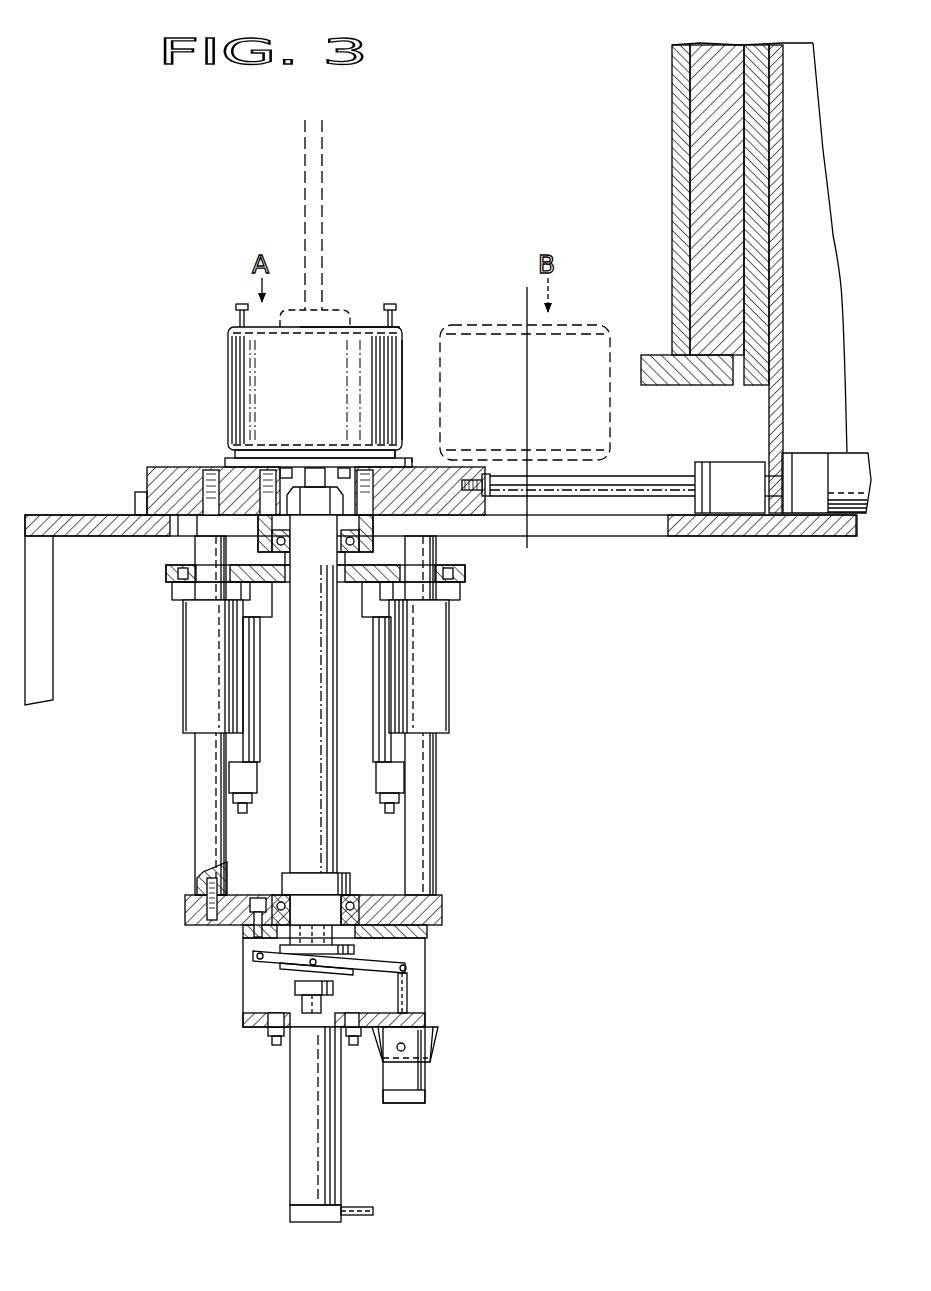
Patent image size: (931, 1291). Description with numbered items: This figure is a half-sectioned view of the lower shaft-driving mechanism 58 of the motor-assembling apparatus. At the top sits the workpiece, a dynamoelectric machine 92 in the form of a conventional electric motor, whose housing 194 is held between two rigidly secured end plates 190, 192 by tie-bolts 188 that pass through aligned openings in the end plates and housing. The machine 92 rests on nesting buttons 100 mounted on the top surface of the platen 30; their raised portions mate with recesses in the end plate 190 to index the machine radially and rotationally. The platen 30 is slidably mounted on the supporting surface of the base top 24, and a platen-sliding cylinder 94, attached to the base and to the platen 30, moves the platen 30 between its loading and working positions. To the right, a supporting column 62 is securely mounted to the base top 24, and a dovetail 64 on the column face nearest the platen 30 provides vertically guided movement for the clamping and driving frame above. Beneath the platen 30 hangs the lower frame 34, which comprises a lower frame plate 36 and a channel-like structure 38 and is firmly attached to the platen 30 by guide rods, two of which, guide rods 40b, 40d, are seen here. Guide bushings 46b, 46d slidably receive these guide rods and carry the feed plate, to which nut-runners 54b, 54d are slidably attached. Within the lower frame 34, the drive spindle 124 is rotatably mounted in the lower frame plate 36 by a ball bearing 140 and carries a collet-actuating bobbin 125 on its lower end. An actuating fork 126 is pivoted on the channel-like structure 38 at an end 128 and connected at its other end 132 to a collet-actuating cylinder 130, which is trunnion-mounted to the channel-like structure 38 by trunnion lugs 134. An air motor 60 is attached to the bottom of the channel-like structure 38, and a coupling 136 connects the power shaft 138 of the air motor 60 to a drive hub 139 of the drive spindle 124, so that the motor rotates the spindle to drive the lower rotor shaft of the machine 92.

The base top 24 is at (25, 515).
The platen 30 is at (148, 468).
The lower frame 34 is at (455, 905).
The lower frame plate 36 is at (185, 905).
The channel-like structure 38 is at (430, 1004).
The guide rod 40b is at (195, 830).
The guide rod 40d is at (437, 830).
The guide bushing 46b is at (185, 677).
The guide bushing 46d is at (449, 680).
The nut-runner 54b is at (242, 752).
The nut-runner 54d is at (397, 750).
The lower shaft-driving mechanism 58 is at (260, 1081).
The air motor 60 is at (340, 1140).
The supporting column 62 is at (800, 68).
The dovetail 64 is at (728, 62).
The dynamoelectric machine 92 is at (212, 362).
The platen-sliding cylinder 94 is at (838, 487).
The nesting button 100 is at (232, 456).
The drive spindle 124 is at (305, 822).
The collet-actuating bobbin 125 is at (343, 974).
The actuating fork 126 is at (370, 958).
The end of actuating fork 128 is at (255, 953).
The collet-actuating cylinder 130 is at (428, 1080).
The end of actuating fork 132 is at (408, 972).
The trunnion lug 134 is at (425, 1036).
The coupling 136 is at (295, 988).
The power shaft 138 is at (285, 1030).
The drive hub 139 is at (280, 967).
The ball bearing 140 is at (355, 894).
The tie-bolt 188 is at (237, 318).
The end plate 190 is at (392, 458).
The end plate 192 is at (365, 327).
The housing 194 is at (402, 345).